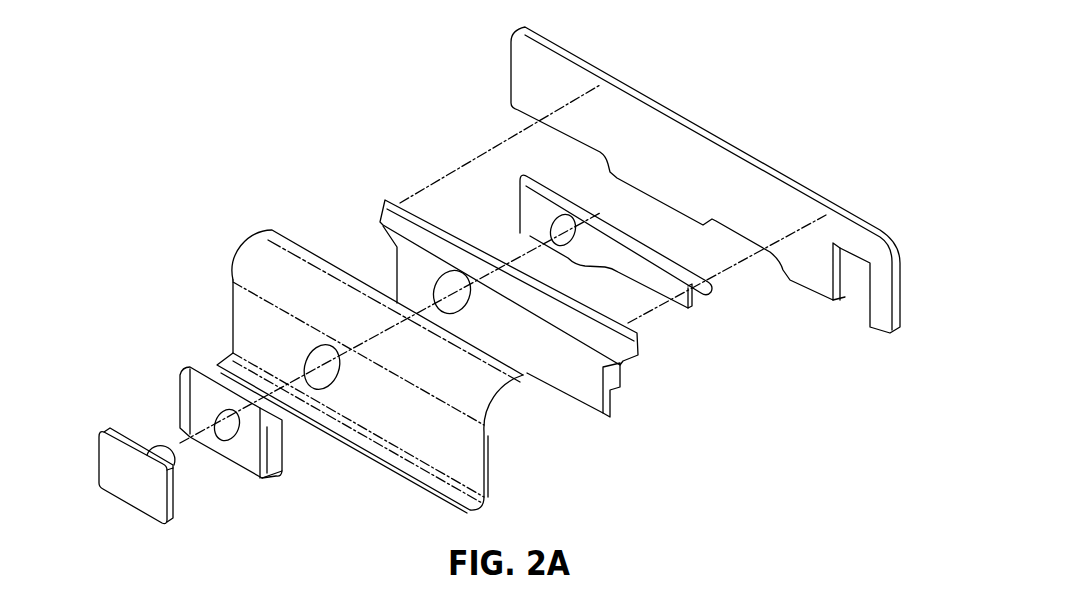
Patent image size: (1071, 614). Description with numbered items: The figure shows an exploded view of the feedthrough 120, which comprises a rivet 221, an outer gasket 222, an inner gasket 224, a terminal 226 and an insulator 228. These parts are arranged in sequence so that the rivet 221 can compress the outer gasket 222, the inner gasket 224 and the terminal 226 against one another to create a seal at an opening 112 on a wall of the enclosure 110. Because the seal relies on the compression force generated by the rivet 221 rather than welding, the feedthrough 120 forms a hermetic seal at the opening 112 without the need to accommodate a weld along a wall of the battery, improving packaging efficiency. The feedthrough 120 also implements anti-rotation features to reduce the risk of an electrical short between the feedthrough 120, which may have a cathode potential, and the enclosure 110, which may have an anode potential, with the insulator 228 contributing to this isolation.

The feedthrough 120 is at (117, 28).
The enclosure 110 is at (283, 248).
The opening 112 is at (343, 386).
The rivet 221 is at (117, 463).
The outer gasket 222 is at (173, 397).
The inner gasket 224 is at (400, 200).
The terminal 226 is at (678, 277).
The insulator 228 is at (746, 147).